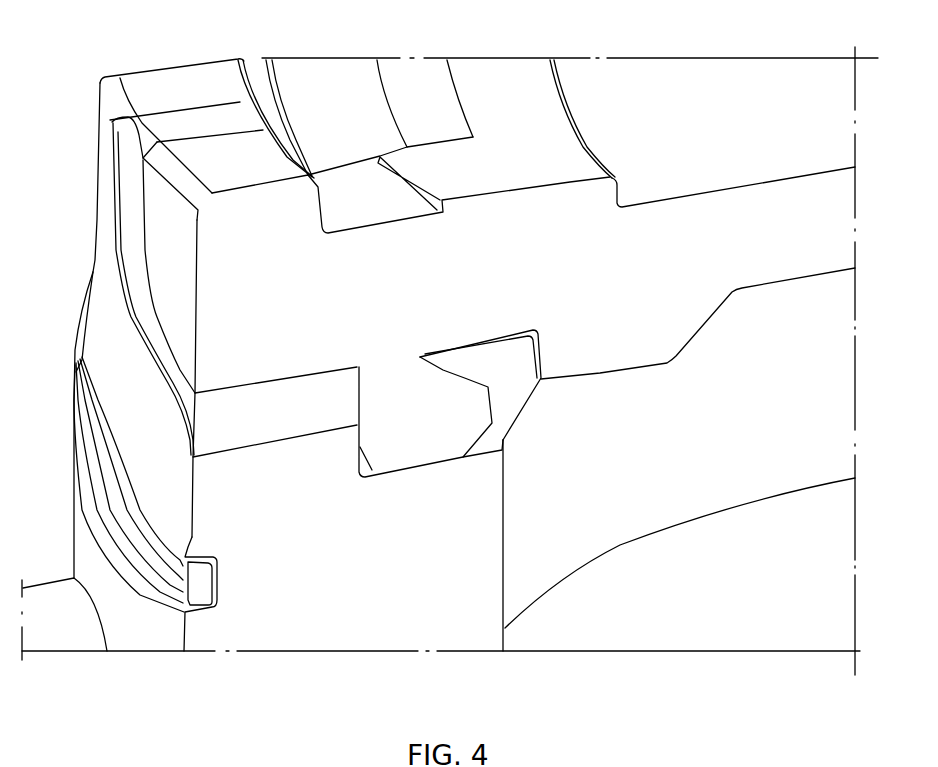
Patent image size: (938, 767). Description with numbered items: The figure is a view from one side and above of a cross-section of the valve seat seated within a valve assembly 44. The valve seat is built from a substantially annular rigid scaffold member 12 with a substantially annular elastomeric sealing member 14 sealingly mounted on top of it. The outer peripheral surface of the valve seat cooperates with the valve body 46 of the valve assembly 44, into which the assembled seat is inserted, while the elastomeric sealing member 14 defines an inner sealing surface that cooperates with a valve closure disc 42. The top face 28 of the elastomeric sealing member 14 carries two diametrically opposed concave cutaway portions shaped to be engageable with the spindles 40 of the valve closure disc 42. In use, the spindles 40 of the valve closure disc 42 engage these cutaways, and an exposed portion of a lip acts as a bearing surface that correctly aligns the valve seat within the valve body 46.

The rigid scaffold member 12 is at (421, 428).
The elastomeric sealing member 14 is at (508, 378).
The top face 28 is at (322, 82).
The spindle 40 is at (243, 272).
The valve closure disc 42 is at (658, 92).
The valve assembly 44 is at (77, 107).
The valve body 46 is at (481, 506).